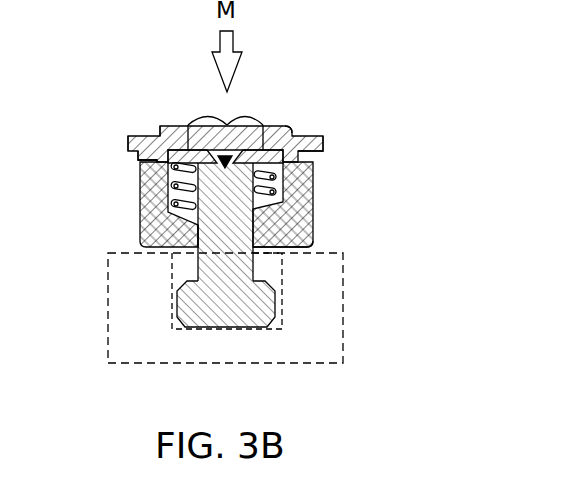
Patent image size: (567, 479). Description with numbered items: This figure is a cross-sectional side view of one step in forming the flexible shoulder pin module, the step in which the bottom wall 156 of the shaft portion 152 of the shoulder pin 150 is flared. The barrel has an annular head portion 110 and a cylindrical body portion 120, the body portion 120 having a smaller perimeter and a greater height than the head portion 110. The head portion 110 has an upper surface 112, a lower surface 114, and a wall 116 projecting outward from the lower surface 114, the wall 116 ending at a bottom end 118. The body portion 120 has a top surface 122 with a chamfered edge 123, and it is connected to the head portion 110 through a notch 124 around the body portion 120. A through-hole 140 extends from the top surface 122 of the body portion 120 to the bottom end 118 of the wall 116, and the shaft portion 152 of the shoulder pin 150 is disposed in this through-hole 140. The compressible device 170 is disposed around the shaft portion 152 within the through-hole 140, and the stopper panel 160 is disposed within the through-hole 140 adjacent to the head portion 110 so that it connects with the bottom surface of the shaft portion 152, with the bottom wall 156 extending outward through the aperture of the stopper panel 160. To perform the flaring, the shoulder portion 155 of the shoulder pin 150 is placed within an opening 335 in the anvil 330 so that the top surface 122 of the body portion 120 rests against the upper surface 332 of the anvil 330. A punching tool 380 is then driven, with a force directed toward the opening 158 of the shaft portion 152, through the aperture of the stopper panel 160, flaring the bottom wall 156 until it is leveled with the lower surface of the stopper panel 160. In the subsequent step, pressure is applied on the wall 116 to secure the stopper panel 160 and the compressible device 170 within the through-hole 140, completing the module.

The head portion 110 is at (327, 138).
The upper surface 112 is at (128, 150).
The lower surface 114 is at (130, 135).
The wall 116 is at (158, 134).
The bottom end 118 is at (288, 128).
The body portion 120 is at (314, 179).
The top surface 122 is at (270, 250).
The chamfered edge 123 is at (313, 248).
The notch 124 is at (142, 153).
The through-hole 140 is at (168, 197).
The shoulder pin 150 is at (198, 266).
The shaft portion 152 is at (212, 223).
The shoulder portion 155 is at (245, 318).
The bottom wall 156 is at (215, 152).
The opening 158 is at (226, 170).
The stopper panel 160 is at (317, 150).
The compressible device 170 is at (277, 202).
The anvil 330 is at (328, 333).
The upper surface 332 is at (125, 252).
The opening 335 is at (263, 255).
The punching tool 380 is at (208, 118).